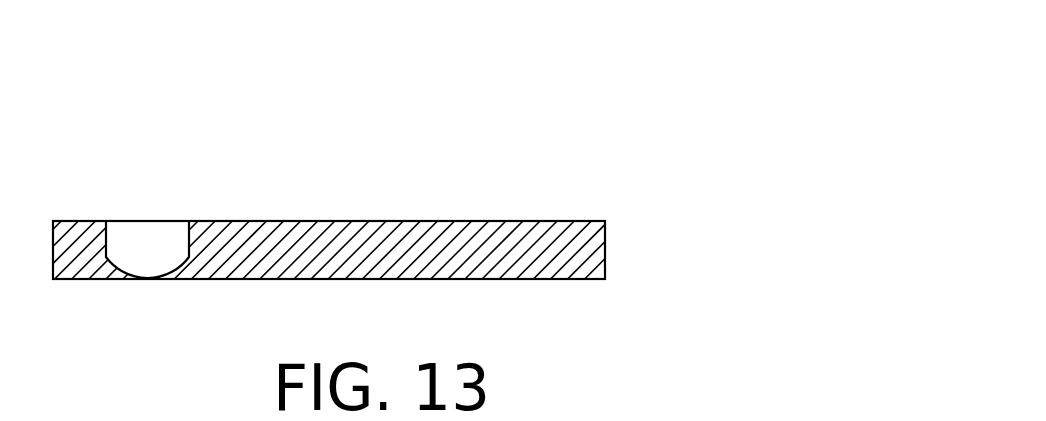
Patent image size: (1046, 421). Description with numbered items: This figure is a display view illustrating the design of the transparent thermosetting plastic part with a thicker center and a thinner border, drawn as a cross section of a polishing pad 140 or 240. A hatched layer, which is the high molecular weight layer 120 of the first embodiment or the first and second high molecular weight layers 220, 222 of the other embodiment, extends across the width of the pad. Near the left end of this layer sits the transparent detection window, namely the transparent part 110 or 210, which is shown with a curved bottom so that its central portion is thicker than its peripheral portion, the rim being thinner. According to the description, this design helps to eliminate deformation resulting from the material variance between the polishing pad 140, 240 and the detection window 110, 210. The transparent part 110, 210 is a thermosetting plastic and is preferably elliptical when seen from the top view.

The transparent part 110 is at (153, 188).
The transparent part 210 is at (148, 228).
The high molecular weight layer 120 is at (444, 250).
The first high molecular weight layer 220 is at (444, 250).
The second high molecular weight layer 222 is at (605, 245).
The polishing pad 140 is at (349, 120).
The polishing pad 240 is at (513, 143).